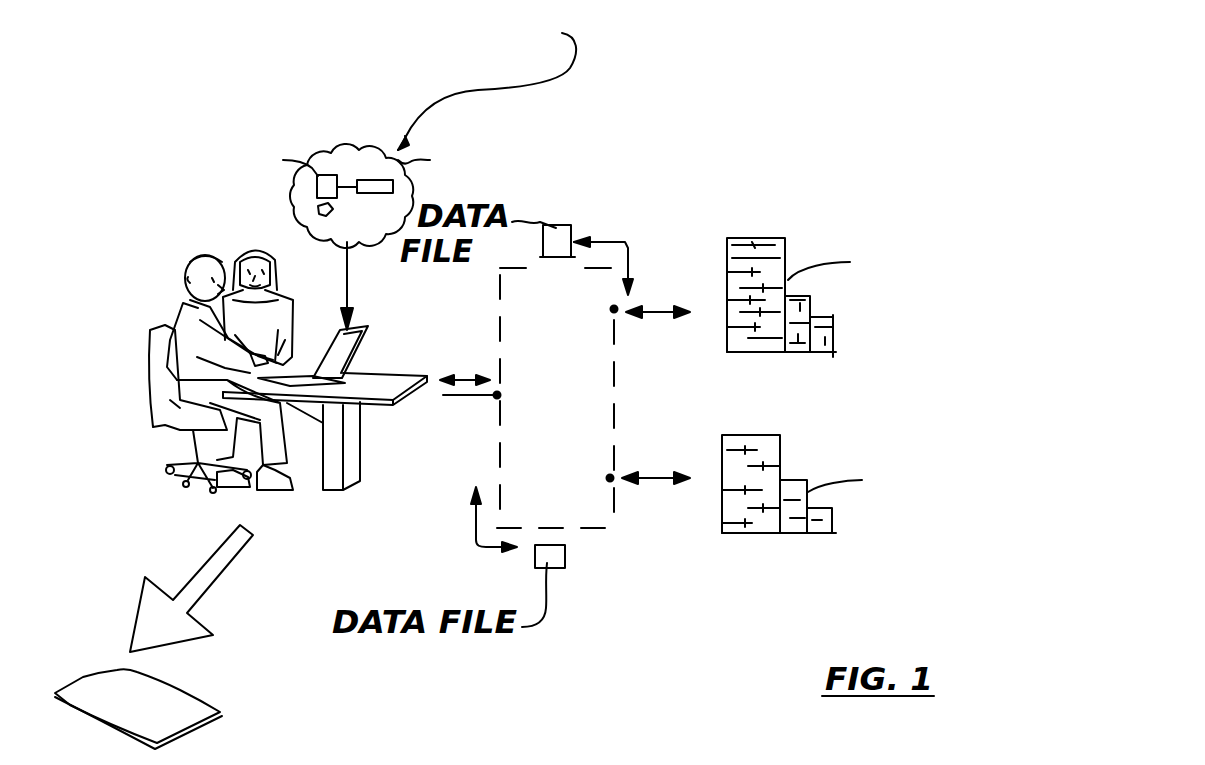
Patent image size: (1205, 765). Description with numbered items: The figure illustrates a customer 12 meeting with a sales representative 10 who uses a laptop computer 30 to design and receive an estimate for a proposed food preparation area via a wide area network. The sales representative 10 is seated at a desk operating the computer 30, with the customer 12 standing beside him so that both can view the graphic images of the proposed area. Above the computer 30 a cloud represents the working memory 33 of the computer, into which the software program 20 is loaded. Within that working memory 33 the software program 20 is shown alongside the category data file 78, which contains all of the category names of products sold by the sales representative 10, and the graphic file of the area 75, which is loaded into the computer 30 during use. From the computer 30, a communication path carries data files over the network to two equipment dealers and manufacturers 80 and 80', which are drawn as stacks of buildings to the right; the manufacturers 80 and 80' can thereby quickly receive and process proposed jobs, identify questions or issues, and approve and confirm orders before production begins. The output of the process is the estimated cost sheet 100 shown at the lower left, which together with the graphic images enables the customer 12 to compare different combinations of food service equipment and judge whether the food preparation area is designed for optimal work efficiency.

The sales representative 10 is at (188, 274).
The customer 12 is at (233, 250).
The software program 20 is at (370, 180).
The computer 30 is at (350, 340).
The working memory 33 is at (404, 145).
The graphic file of the area 75 is at (312, 214).
The category data file 78 is at (322, 176).
The equipment dealer and manufacturer 80 is at (947, 297).
The equipment dealer and manufacturer 80' is at (942, 496).
The estimated cost sheet 100 is at (190, 707).